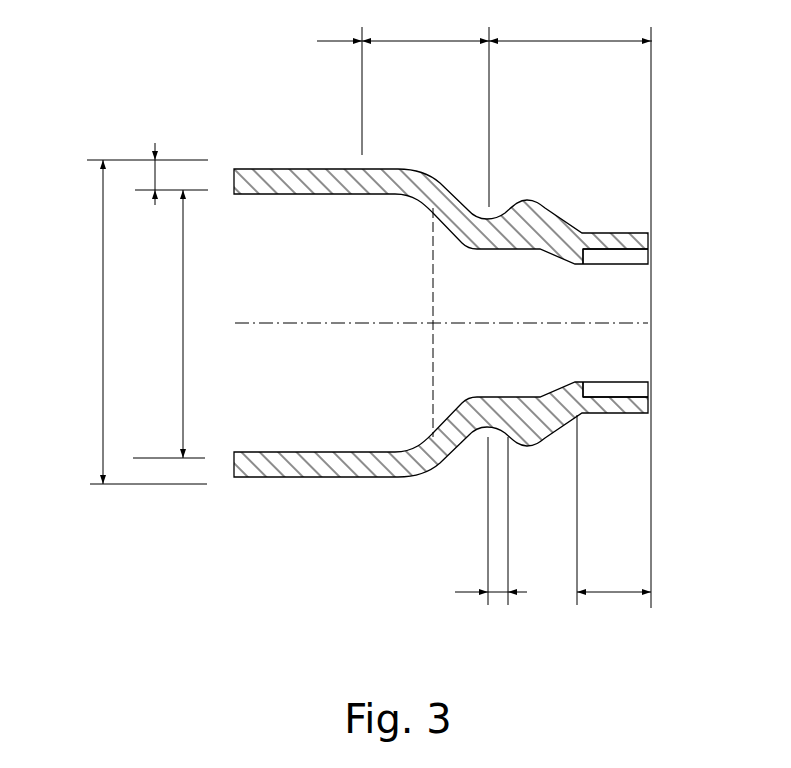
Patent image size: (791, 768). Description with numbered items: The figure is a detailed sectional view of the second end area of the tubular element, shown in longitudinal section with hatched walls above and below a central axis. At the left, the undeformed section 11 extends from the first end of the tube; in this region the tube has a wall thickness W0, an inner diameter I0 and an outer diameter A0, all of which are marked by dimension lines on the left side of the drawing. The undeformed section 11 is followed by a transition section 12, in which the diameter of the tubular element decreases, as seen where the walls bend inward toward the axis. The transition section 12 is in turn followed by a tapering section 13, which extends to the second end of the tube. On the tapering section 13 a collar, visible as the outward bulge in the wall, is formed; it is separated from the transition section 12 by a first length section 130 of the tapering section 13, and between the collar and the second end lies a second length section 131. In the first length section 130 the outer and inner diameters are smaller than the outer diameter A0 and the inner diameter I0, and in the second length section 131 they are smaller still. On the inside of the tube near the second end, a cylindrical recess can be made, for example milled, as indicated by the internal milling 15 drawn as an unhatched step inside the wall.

The undeformed section 11 is at (339, 82).
The transition section 12 is at (425, 108).
The tapering section 13 is at (570, 309).
The first length section 130 is at (482, 532).
The second length section 131 is at (614, 521).
The internal milling 15 is at (647, 253).
The outer diameter A0 is at (130, 322).
The inner diameter I0 is at (170, 324).
The wall thickness W0 is at (177, 174).